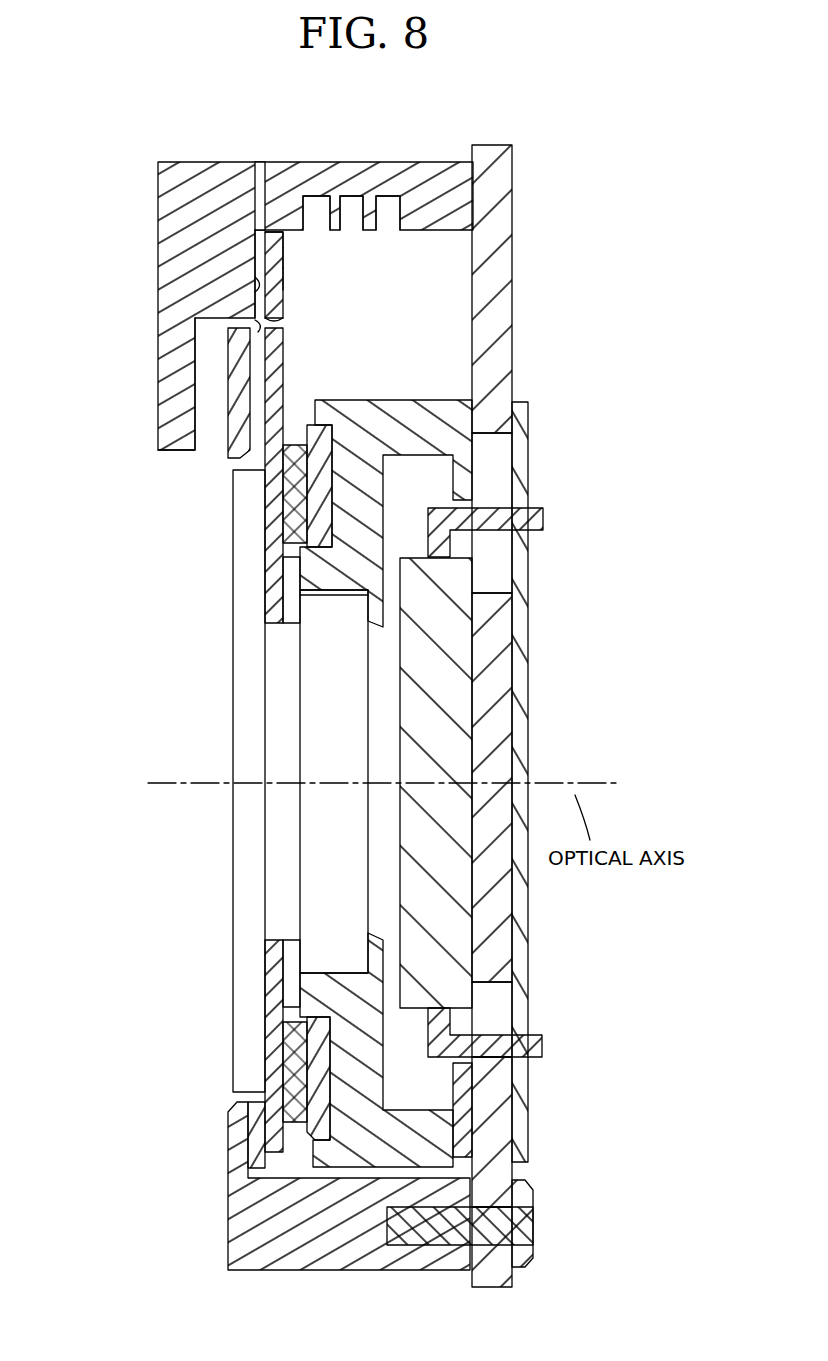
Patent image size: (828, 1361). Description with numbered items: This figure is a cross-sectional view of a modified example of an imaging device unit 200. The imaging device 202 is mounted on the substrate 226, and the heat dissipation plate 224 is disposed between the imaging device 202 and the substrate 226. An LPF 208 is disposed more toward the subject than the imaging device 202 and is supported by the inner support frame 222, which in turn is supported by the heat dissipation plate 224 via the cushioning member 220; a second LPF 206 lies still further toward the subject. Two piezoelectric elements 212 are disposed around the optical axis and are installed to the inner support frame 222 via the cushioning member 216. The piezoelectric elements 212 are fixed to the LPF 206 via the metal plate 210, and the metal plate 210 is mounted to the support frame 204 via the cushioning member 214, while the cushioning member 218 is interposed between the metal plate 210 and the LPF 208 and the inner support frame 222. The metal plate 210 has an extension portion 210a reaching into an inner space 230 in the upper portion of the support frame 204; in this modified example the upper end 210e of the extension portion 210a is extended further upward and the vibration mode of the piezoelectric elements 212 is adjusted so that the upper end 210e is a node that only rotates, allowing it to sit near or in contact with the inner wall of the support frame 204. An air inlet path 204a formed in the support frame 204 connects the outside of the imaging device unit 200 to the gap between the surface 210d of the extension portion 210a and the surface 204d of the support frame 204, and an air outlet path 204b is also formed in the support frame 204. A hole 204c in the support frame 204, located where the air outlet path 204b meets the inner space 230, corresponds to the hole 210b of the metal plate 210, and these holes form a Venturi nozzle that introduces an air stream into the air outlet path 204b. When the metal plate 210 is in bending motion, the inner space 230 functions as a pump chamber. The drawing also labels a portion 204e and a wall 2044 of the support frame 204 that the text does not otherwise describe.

The imaging device unit 200 is at (471, 1186).
The imaging device 202 is at (447, 745).
The support frame 204 is at (218, 185).
The air inlet path 204a is at (262, 200).
The air outlet path 204b is at (212, 380).
The hole 204c is at (252, 330).
The surface of the support frame 204d is at (256, 295).
The projections 204e is at (368, 195).
The wall portion 2044 is at (255, 235).
The LPF 206 is at (240, 913).
The LPF 208 is at (320, 707).
The metal plate 210 is at (276, 496).
The extension portion 210a is at (262, 275).
The hole 210b is at (260, 318).
The surface of the extension portion 210d is at (258, 255).
The upper end 210e is at (278, 215).
The piezoelectric element 212 is at (292, 484).
The cushioning member 214 is at (262, 437).
The cushioning member 216 is at (310, 528).
The cushioning member 218 is at (290, 612).
The cushioning member 220 is at (480, 462).
The inner support frame 222 is at (455, 570).
The heat dissipation plate 224 is at (492, 906).
The substrate 226 is at (524, 946).
The inner space 230 is at (402, 258).